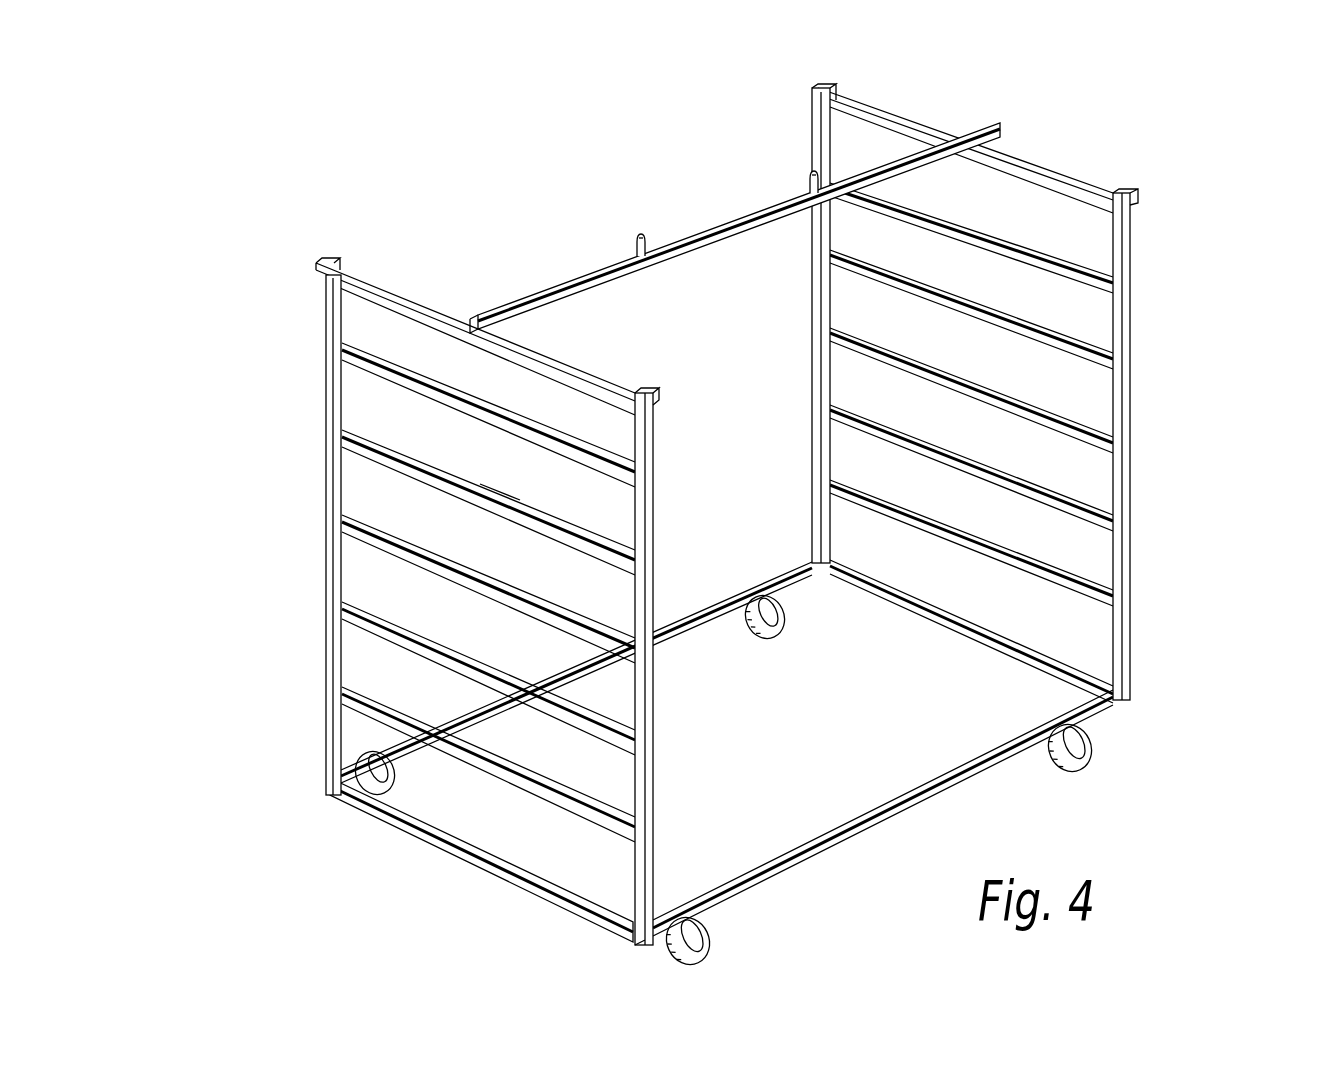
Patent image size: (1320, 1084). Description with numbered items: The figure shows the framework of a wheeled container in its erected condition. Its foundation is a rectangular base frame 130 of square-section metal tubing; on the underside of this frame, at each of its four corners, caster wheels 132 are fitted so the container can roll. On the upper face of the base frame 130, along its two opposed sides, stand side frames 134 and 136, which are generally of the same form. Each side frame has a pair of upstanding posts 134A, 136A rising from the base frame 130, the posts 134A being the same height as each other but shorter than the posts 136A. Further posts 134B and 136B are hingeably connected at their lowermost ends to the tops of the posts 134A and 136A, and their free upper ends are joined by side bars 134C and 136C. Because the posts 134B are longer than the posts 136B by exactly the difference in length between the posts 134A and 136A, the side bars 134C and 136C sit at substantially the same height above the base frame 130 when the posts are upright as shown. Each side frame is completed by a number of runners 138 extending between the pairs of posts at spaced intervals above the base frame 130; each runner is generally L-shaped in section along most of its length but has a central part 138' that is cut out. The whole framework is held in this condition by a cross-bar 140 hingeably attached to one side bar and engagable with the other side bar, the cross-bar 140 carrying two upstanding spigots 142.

The base frame 130 is at (935, 762).
The caster wheels 132 is at (781, 621).
The side frame 134 is at (469, 589).
The upstanding posts 134A is at (327, 687).
The further posts 134B is at (327, 417).
The side bar 134C is at (420, 302).
The side frame 136 is at (1011, 393).
The upstanding posts 136A is at (815, 520).
The further posts 136B is at (815, 356).
The side bar 136C is at (1075, 176).
The runners 138 is at (488, 592).
The central part 138' is at (515, 538).
The cross-bar 140 is at (722, 243).
The spigots 142 is at (638, 238).